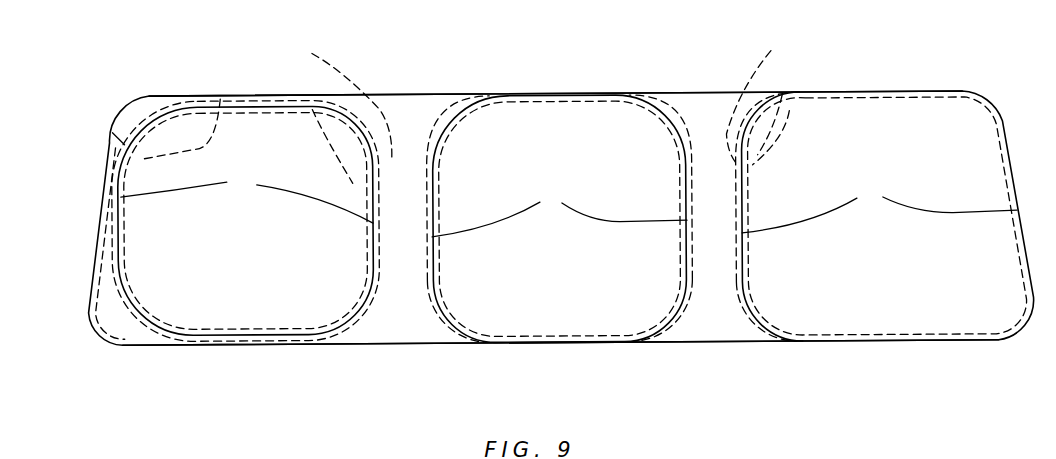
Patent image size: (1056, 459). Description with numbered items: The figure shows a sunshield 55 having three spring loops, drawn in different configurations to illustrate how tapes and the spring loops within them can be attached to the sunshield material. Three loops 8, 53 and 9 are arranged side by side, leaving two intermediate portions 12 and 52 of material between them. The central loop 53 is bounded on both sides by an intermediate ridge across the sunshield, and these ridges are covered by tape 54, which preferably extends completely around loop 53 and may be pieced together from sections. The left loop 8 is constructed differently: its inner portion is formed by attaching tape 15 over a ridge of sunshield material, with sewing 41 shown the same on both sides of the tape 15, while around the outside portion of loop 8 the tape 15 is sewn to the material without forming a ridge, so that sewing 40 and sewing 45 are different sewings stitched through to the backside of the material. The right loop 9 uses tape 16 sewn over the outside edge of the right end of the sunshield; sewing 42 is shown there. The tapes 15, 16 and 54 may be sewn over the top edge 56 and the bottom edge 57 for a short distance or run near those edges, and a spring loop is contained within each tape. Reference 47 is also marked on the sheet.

The loop 8 is at (218, 277).
The loop 9 is at (869, 267).
The intermediate portion 12 is at (389, 310).
The tape 15 is at (247, 197).
The tape 16 is at (879, 205).
The sewing 40 is at (105, 118).
The sewing 41 is at (313, 108).
The filling tube 42 is at (790, 112).
The sewing 45 is at (227, 84).
The reference line 47 is at (797, 458).
The intermediate portion 52 is at (707, 317).
The central loop 53 is at (574, 273).
The tape 54 is at (559, 206).
The sunshield 55 is at (354, 375).
The top edge 56 is at (423, 93).
The bottom edge 57 is at (705, 343).